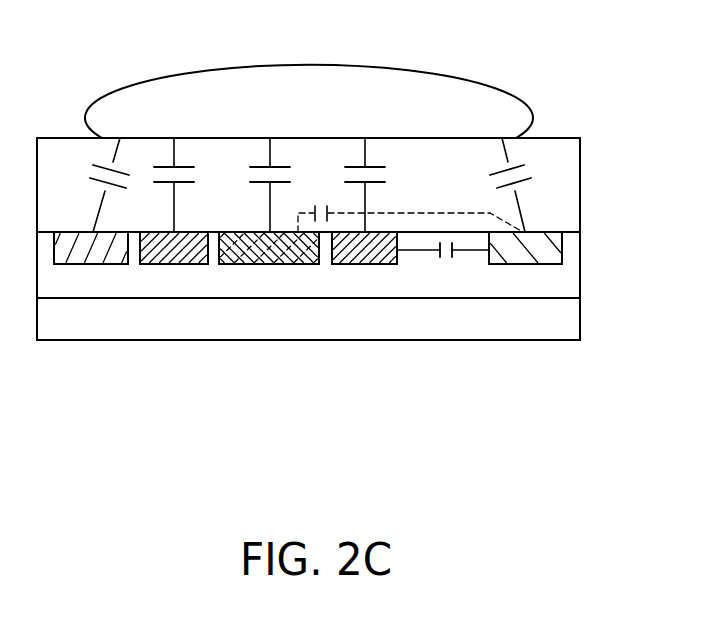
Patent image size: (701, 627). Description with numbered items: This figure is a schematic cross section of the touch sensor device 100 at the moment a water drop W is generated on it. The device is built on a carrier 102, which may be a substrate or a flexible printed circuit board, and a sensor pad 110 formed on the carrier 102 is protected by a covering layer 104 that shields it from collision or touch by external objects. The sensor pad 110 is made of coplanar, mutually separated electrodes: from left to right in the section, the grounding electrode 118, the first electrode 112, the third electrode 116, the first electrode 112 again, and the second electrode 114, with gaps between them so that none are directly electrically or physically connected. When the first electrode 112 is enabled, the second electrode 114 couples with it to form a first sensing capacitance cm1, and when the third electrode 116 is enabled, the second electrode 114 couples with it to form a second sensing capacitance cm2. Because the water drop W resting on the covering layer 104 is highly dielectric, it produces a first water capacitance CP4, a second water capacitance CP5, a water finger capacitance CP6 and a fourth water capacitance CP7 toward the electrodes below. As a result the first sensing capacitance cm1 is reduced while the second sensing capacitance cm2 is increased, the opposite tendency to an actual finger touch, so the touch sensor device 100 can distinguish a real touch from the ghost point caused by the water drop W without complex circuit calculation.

The touch sensor device 100 is at (660, 411).
The carrier 102 is at (565, 322).
The covering layer 104 is at (562, 186).
The sensor pad 110 is at (308, 342).
The first electrode 112 is at (177, 255).
The second electrode 114 is at (515, 252).
The third electrode 116 is at (248, 255).
The grounding electrode 118 is at (100, 252).
The water drop W is at (145, 80).
The first water capacitance CP4 is at (293, 174).
The second water capacitance CP5 is at (489, 185).
The water finger capacitance CP6 is at (291, 164).
The fourth water capacitance CP7 is at (87, 185).
The first sensing capacitance cm1 is at (443, 266).
The second sensing capacitance cm2 is at (409, 203).